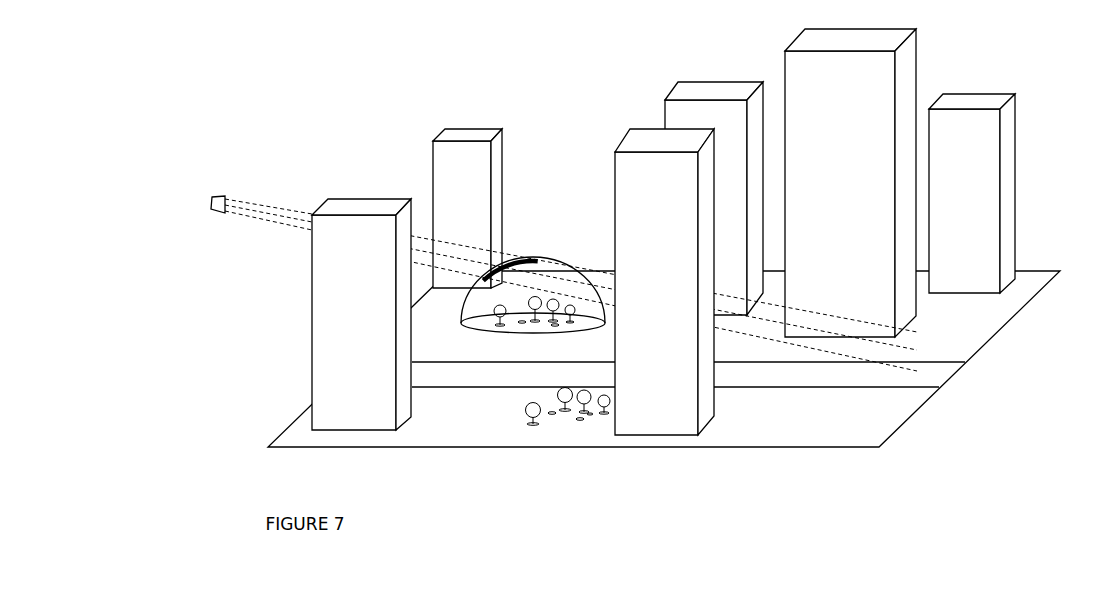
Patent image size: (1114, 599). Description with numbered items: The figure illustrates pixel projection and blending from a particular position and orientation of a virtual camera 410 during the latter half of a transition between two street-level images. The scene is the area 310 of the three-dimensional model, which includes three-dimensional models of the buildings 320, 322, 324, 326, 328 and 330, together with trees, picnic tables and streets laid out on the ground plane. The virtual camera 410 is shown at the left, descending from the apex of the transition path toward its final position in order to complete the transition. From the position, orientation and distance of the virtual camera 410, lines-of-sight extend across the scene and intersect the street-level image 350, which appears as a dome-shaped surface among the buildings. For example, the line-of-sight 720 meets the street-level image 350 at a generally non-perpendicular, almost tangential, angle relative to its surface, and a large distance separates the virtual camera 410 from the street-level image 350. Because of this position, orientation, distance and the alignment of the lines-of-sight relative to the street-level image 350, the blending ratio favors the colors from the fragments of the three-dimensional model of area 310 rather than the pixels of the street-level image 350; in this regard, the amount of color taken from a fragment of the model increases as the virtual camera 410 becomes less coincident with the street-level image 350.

The area 310 is at (291, 502).
The building 320 is at (312, 265).
The building 322 is at (614, 214).
The building 324 is at (433, 157).
The building 326 is at (665, 107).
The building 328 is at (916, 55).
The building 330 is at (1015, 123).
The street-level image 350 is at (533, 289).
The virtual camera 410 is at (217, 195).
The line-of-sight 720 is at (262, 205).